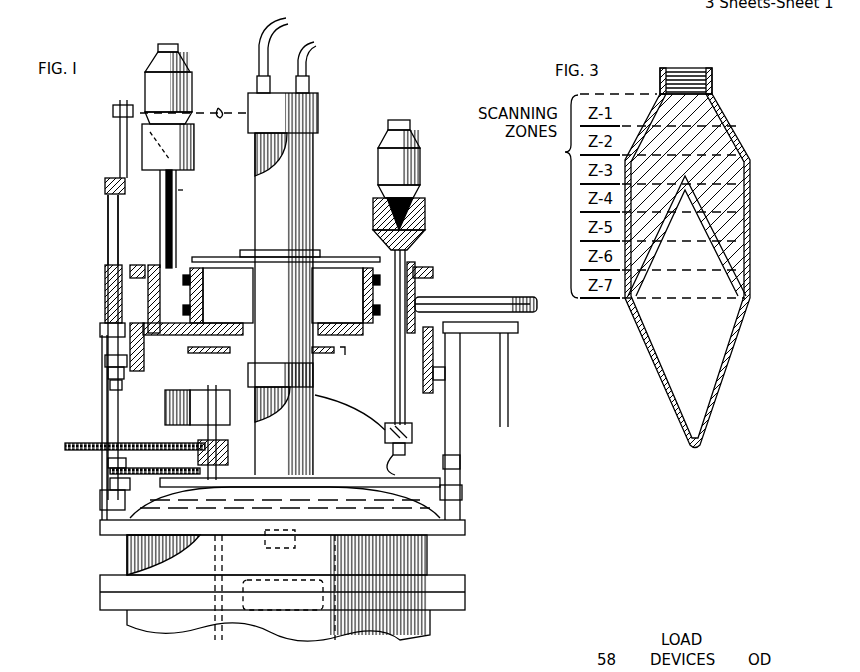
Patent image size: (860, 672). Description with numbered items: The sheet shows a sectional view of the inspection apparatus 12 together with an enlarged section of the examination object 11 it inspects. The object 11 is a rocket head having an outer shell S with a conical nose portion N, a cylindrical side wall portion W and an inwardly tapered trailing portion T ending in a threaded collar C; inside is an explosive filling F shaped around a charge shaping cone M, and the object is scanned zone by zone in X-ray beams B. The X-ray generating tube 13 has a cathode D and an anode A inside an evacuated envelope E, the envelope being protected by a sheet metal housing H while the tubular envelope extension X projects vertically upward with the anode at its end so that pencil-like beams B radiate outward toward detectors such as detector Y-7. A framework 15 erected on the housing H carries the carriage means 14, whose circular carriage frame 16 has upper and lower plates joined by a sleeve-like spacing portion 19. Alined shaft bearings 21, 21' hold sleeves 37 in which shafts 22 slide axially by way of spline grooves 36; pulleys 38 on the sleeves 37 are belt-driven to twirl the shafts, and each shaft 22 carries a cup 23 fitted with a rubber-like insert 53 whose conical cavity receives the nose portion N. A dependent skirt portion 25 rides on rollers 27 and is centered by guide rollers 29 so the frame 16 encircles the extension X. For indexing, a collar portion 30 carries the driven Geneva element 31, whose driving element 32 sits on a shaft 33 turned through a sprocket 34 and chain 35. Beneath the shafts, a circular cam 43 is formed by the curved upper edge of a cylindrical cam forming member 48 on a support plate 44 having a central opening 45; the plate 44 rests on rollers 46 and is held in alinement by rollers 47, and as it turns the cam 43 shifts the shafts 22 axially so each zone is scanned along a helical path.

In FIG. 1, the examination object 11 is at (190, 80).
In FIG. 3, the examination object 11 is at (712, 410).
In FIG. 1, the inspection apparatus 12 is at (485, 527).
In FIG. 1, the X-ray generating tube 13 is at (215, 600).
In FIG. 1, the carriage means 14 is at (455, 272).
In FIG. 1, the framework 15 is at (462, 446).
In FIG. 1, the carriage frame 16 is at (359, 367).
In FIG. 1, the spacing portion 19 is at (203, 284).
In FIG. 1, the shaft bearing 21 is at (282, 266).
In FIG. 1, the shaft bearing 21' is at (232, 334).
In FIG. 1, the shaft 22 is at (178, 250).
In FIG. 1, the cup 23 is at (193, 160).
In FIG. 1, the skirt portion 25 is at (130, 350).
In FIG. 1, the roller 27 is at (135, 392).
In FIG. 1, the guide roller 29 is at (105, 370).
In FIG. 1, the collar portion 30 is at (328, 345).
In FIG. 1, the driven element 31 is at (313, 375).
In FIG. 1, the driving element 32 is at (215, 356).
In FIG. 1, the shaft 33 is at (216, 405).
In FIG. 1, the driving sprocket 34 is at (232, 452).
In FIG. 1, the sprocket driving chain 35 is at (85, 443).
In FIG. 1, the spline groove 36 is at (160, 203).
In FIG. 1, the sleeve 37 is at (150, 285).
In FIG. 1, the driving pulley 38 is at (203, 308).
In FIG. 1, the circular cam 43 is at (345, 410).
In FIG. 1, the support plate 44 is at (125, 468).
In FIG. 1, the central opening 45 is at (385, 465).
In FIG. 1, the roller 46 is at (150, 495).
In FIG. 1, the roller 47 is at (110, 482).
In FIG. 1, the cam forming member 48 is at (382, 439).
In FIG. 1, the insert 53 is at (425, 205).
In FIG. 1, the anode A is at (285, 105).
In FIG. 1, the X-ray beam B is at (195, 99).
In FIG. 1, the envelope extension X is at (255, 197).
In FIG. 1, the detector Y-7 is at (113, 112).
In FIG. 1, the housing H is at (130, 556).
In FIG. 1, the cathode D is at (265, 562).
In FIG. 1, the envelope E is at (355, 557).
In FIG. 3, the threaded collar C is at (689, 82).
In FIG. 3, the trailing portion T is at (730, 136).
In FIG. 3, the shell S is at (757, 150).
In FIG. 3, the filling F is at (775, 178).
In FIG. 3, the charge shaping cone M is at (716, 236).
In FIG. 3, the side wall portion W is at (752, 255).
In FIG. 3, the nose portion N is at (722, 372).